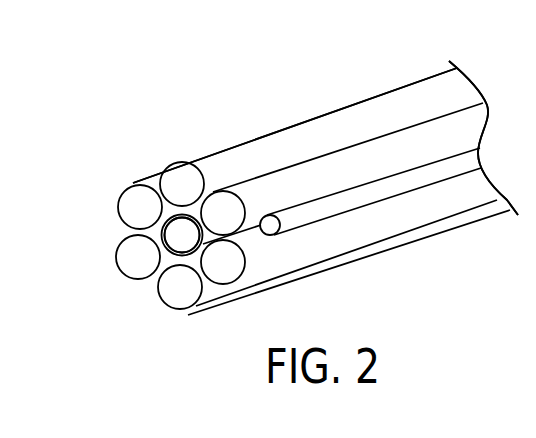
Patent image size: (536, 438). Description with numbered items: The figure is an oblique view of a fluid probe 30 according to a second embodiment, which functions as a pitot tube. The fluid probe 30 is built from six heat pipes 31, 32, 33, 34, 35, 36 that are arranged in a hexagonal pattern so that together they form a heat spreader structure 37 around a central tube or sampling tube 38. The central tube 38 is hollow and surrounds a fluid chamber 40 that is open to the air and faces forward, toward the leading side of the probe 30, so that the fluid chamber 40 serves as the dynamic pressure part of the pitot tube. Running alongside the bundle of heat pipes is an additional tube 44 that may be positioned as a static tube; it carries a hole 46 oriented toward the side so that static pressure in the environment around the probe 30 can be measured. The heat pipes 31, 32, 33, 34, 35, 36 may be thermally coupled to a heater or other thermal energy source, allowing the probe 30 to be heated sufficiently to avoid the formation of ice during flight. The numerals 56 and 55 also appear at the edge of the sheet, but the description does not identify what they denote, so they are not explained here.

The fluid probe 30 is at (243, 100).
The heat pipe 31 is at (175, 178).
The heat pipe 32 is at (221, 204).
The heat pipe 33 is at (293, 247).
The heat pipe 34 is at (182, 292).
The heat pipe 35 is at (133, 259).
The heat pipe 36 is at (132, 199).
The heat spreader structure 37 is at (311, 107).
The central tube 38 is at (173, 232).
The fluid chamber 40 is at (186, 250).
The additional tube 44 is at (398, 185).
The hole 46 is at (294, 214).
The element of adjacent figure 56 is at (535, 374).
The element of adjacent figure 55 is at (508, 428).